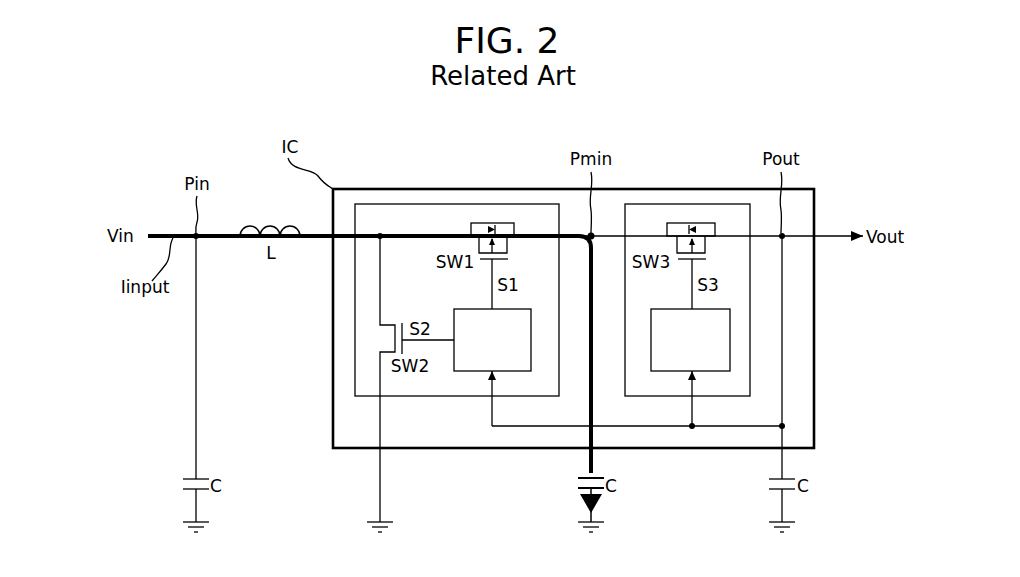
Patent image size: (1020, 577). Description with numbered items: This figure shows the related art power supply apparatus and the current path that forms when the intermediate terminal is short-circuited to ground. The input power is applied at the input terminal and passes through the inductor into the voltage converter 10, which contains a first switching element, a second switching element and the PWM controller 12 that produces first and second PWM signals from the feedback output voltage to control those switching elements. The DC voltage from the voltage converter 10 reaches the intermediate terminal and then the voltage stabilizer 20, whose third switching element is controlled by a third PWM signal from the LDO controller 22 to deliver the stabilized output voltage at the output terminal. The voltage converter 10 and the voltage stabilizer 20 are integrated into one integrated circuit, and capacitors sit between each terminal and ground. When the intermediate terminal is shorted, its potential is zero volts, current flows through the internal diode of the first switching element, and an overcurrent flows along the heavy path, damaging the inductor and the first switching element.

The voltage converter 10 is at (456, 204).
The pulse width modulation (PWM) controller 12 is at (492, 340).
The voltage stabilizer 20 is at (688, 204).
The low drop out (LDO) controller 22 is at (690, 340).